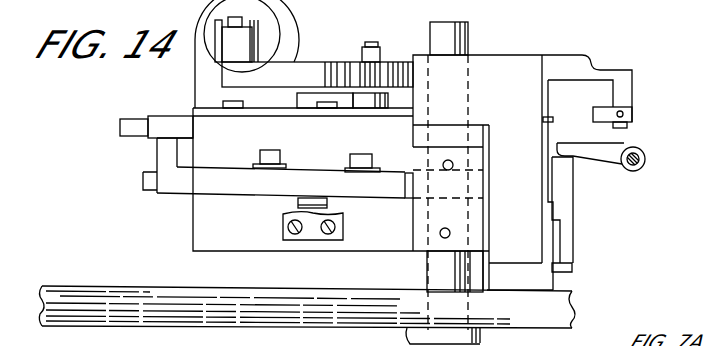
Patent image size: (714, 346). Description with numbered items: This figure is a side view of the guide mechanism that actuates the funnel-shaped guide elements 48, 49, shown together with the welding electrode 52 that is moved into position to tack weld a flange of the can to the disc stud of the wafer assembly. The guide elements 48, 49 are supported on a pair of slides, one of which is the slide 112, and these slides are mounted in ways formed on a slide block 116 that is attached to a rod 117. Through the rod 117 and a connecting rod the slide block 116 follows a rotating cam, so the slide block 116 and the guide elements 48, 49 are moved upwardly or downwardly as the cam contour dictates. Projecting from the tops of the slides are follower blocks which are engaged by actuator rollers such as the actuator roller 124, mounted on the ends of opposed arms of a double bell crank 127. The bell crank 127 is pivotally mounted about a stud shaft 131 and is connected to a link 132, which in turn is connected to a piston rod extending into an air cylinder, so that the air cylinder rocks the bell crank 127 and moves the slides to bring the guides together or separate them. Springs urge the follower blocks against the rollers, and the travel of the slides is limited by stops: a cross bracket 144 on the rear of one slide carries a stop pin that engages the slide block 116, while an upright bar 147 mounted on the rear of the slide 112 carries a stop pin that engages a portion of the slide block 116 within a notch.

The slide 112 is at (563, 63).
The slide block 116 is at (203, 220).
The rod 117 is at (435, 270).
The actuator roller 124 is at (307, 103).
The double bell crank 127 is at (310, 72).
The stud shaft 131 is at (368, 100).
The link 132 is at (253, 43).
The cross bracket 144 is at (127, 136).
The upright bar 147 is at (162, 149).
The guide element 48 is at (550, 118).
The guide element 49 is at (603, 111).
The welding electrode 52 is at (607, 155).